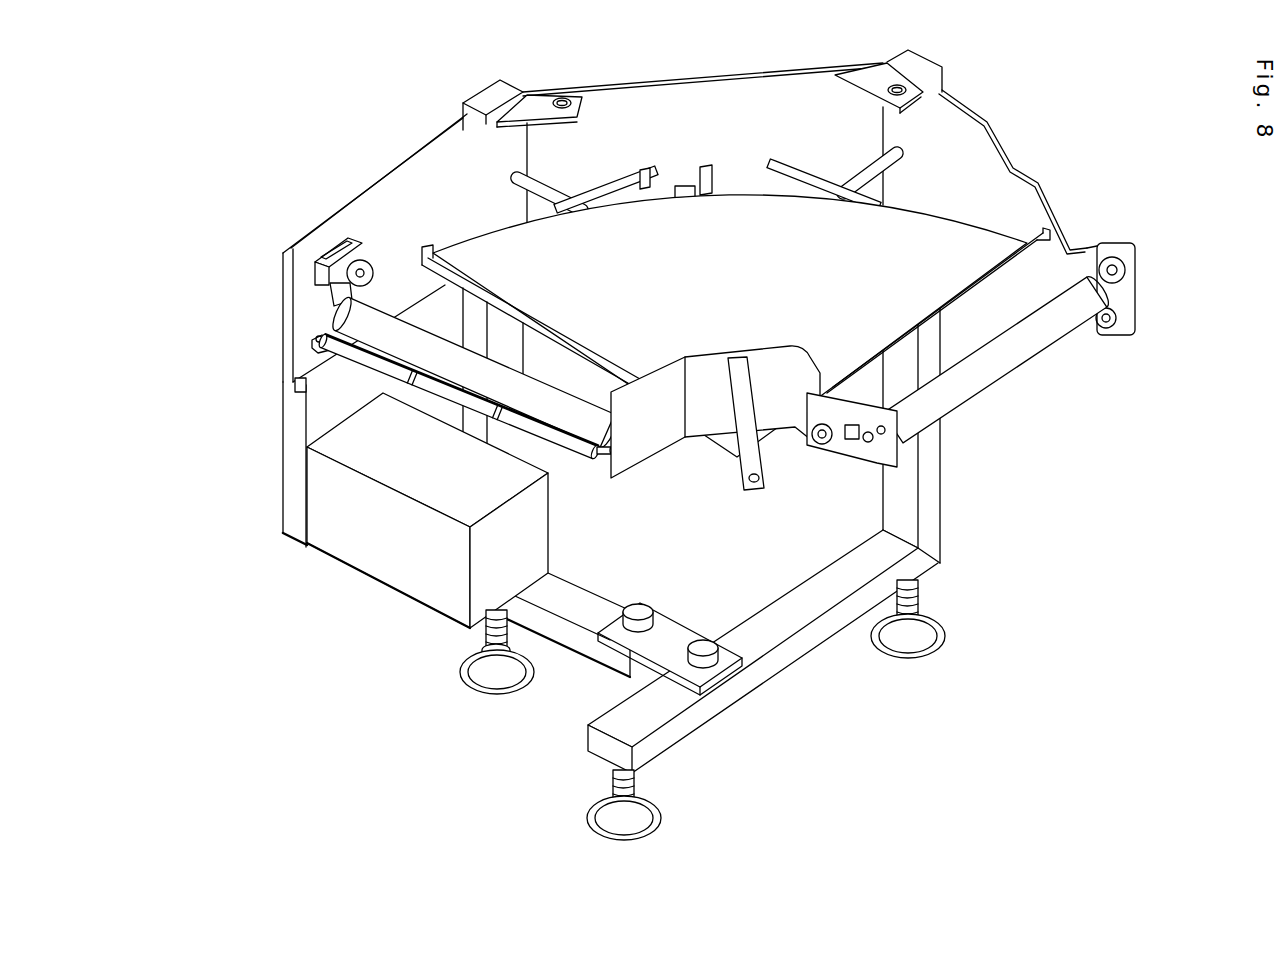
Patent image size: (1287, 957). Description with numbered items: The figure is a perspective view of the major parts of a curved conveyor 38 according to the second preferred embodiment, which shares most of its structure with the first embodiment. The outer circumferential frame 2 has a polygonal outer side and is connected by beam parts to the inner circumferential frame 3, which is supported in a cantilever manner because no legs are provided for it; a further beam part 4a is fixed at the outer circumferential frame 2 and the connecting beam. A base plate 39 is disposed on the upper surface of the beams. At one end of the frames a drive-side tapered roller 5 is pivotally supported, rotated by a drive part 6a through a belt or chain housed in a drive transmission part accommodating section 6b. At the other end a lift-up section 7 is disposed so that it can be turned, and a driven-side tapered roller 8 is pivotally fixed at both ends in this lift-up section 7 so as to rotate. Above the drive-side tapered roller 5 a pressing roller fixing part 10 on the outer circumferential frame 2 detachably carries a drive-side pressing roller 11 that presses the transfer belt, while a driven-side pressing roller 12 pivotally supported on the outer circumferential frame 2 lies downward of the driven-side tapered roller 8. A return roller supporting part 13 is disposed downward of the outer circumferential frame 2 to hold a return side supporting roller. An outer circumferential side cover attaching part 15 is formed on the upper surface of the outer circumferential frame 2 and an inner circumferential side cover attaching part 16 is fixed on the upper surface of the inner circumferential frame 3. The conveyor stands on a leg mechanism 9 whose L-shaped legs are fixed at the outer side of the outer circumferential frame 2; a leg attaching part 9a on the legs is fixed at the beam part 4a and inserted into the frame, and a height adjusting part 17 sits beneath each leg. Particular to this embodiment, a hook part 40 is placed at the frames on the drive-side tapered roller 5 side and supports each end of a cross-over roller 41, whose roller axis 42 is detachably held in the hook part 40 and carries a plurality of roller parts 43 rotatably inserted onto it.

The outer circumferential frame 2 is at (707, 108).
The inner circumferential frame 3 is at (710, 412).
The beam part 4a is at (790, 173).
The drive-side tapered roller 5 is at (370, 328).
The drive part 6a is at (387, 563).
The drive transmission part accommodating section 6b is at (292, 507).
The lift-up section 7 is at (1038, 361).
The driven-side tapered roller 8 is at (975, 365).
The leg mechanism 9 is at (577, 613).
The leg attaching part 9a is at (557, 197).
The pressing roller fixing part 10 is at (315, 268).
The drive-side pressing roller 11 is at (368, 263).
The driven-side pressing roller 12 is at (1105, 335).
The return roller supporting part 13 is at (680, 185).
The outer circumferential side cover attaching part 15 is at (560, 98).
The inner circumferential side cover attaching part 16 is at (764, 485).
The height adjusting part 17 is at (928, 642).
The curved conveyor 38 is at (690, 430).
The base plate 39 is at (963, 247).
The hook part 40 is at (310, 345).
The cross-over roller 41 is at (553, 459).
The roller axis 42 is at (603, 463).
The roller parts 43 is at (300, 385).